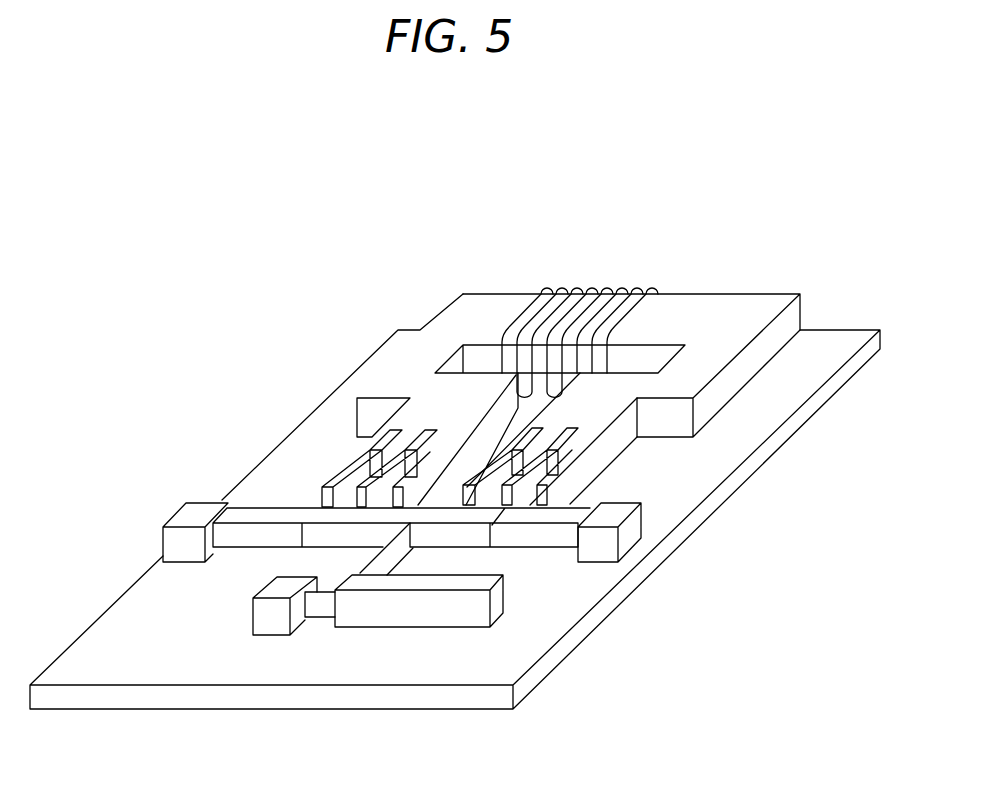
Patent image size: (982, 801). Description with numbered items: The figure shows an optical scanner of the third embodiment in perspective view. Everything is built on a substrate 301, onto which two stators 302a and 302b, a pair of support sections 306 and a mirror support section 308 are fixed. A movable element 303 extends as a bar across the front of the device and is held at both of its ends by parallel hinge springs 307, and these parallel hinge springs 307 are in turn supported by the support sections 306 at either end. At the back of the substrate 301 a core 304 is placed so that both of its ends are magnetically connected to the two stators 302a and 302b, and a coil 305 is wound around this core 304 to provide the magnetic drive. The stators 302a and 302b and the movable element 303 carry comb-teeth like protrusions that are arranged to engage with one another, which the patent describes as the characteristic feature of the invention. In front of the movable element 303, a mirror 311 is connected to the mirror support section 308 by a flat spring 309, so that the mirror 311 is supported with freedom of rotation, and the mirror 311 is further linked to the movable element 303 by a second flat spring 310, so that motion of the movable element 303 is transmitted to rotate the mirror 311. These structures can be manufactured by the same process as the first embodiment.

The substrate 301 is at (392, 345).
The stator 302a is at (400, 410).
The stator 302b is at (583, 433).
The movable element 303 is at (332, 513).
The core 304 is at (460, 314).
The coil 305 is at (570, 290).
The support section 306 is at (183, 512).
The parallel hinge spring 307 is at (270, 530).
The mirror support section 308 is at (258, 617).
The flat spring 309 is at (322, 612).
The flat spring 310 is at (390, 553).
The mirror 311 is at (497, 605).